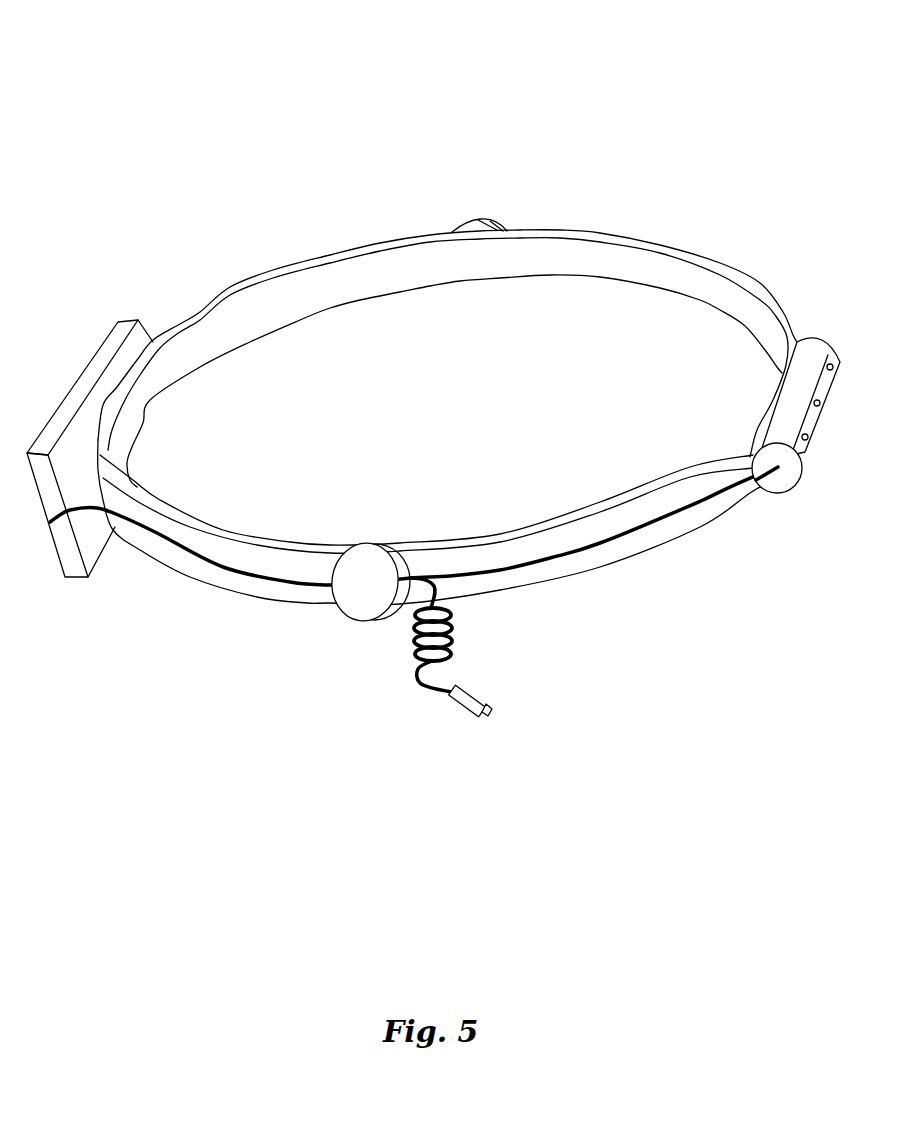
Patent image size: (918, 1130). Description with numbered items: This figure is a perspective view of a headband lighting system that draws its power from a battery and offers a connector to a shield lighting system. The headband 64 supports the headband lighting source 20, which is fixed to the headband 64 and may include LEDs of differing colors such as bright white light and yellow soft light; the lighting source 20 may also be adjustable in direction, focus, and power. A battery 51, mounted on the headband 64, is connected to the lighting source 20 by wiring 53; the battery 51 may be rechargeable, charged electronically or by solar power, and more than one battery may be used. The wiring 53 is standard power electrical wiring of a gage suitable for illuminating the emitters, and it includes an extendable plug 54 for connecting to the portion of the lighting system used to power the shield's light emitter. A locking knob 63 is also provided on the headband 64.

The headband 64 is at (530, 117).
The battery 51 is at (130, 317).
The wiring 53 is at (545, 563).
The extendable plug 54 is at (487, 708).
The locking knob 63 is at (322, 597).
The headband lighting source 20 is at (807, 457).